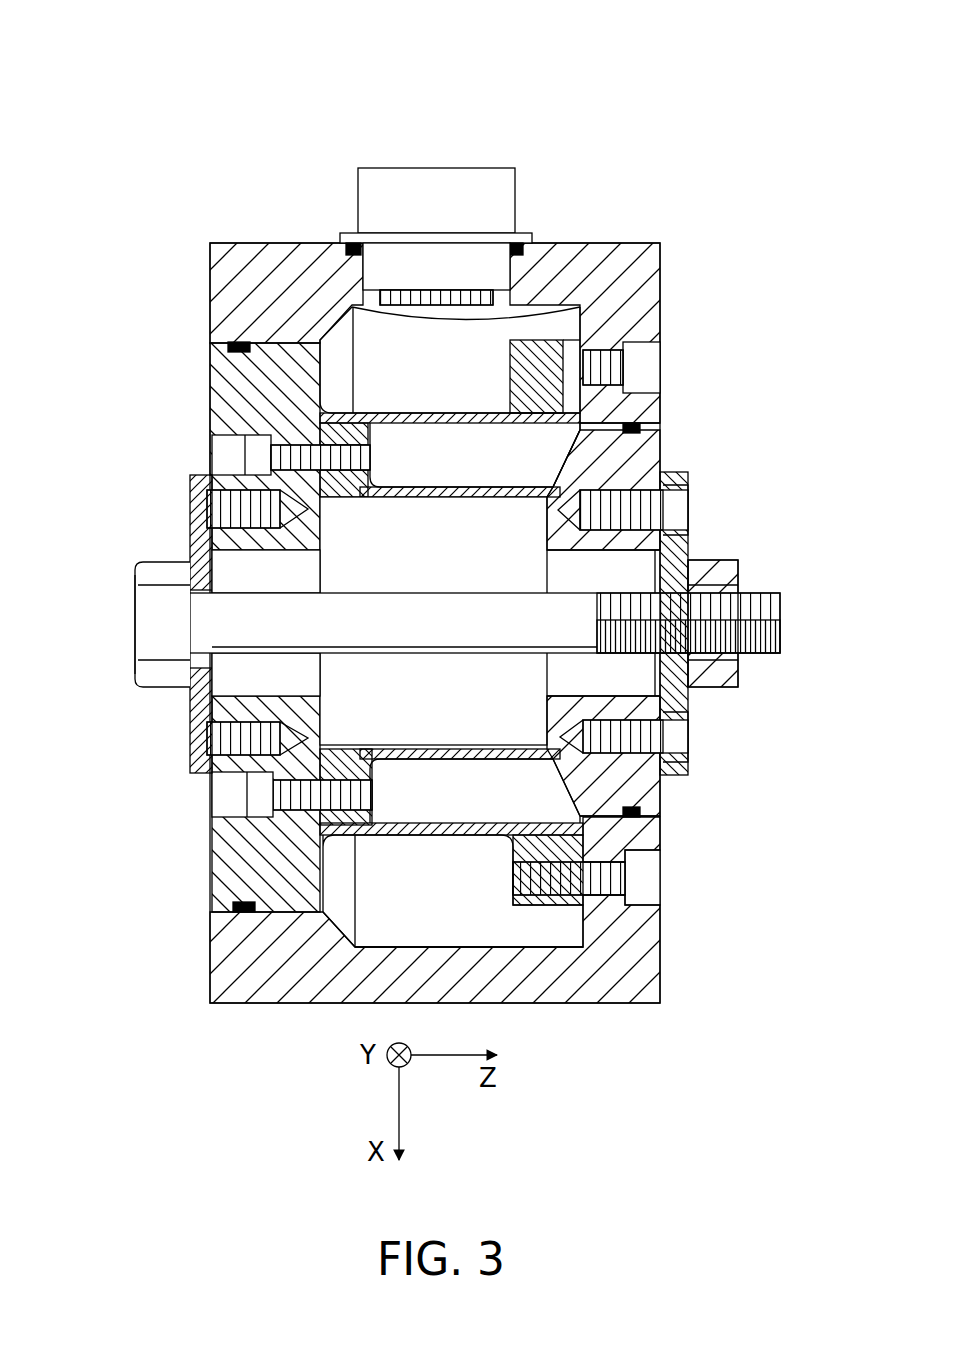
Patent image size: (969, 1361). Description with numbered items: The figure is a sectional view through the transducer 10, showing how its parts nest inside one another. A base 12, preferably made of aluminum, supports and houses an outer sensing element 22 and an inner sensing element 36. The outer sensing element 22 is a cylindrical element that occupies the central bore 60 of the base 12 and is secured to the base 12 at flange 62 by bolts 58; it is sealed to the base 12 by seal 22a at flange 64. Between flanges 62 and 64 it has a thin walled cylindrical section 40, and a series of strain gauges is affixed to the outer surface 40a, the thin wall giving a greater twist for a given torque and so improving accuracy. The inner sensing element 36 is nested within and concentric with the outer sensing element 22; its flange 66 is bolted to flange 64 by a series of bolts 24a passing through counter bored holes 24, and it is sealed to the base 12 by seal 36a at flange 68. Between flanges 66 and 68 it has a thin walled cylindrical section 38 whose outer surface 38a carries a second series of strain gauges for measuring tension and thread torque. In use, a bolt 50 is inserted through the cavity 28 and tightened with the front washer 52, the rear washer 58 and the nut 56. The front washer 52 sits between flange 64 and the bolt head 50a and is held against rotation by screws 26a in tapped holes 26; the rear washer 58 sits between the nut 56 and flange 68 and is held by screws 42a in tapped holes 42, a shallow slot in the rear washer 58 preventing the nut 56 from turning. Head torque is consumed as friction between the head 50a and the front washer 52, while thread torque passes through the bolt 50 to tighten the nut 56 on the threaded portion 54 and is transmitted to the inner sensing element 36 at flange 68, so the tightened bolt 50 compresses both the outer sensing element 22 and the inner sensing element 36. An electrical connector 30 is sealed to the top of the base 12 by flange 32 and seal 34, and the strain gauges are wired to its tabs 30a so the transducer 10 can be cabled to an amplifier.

The transducer 10 is at (231, 82).
The base 12 is at (213, 240).
The outer sensing element 22 is at (240, 365).
The seal 22a is at (235, 908).
The counter bored holes 24 is at (212, 795).
The bolts 24a is at (213, 806).
The tapped holes 26 is at (240, 456).
The screws 26a is at (200, 506).
The cavity 28 is at (282, 586).
The electrical connector 30 is at (481, 167).
The tabs 30a is at (466, 300).
The flange 32 is at (528, 234).
The seal 34 is at (345, 246).
The inner sensing element 36 is at (662, 466).
The seal 36a is at (645, 431).
The cylindrical section 38 is at (434, 502).
The outer surface 38a is at (470, 482).
The cylindrical section 40 is at (437, 410).
The outer surface 40a is at (392, 412).
The tapped holes 42 is at (670, 776).
The screws 42a is at (690, 736).
The bolt 50 is at (135, 608).
The head 50a is at (140, 576).
The front washer 52 is at (187, 690).
The threaded portion 54 is at (785, 611).
The nut 56 is at (740, 579).
The rear washer 58 is at (648, 363).
The central bore 60 is at (505, 925).
The flange 62 is at (540, 378).
The flange 64 is at (232, 344).
The flange 66 is at (345, 760).
The flange 68 is at (600, 471).